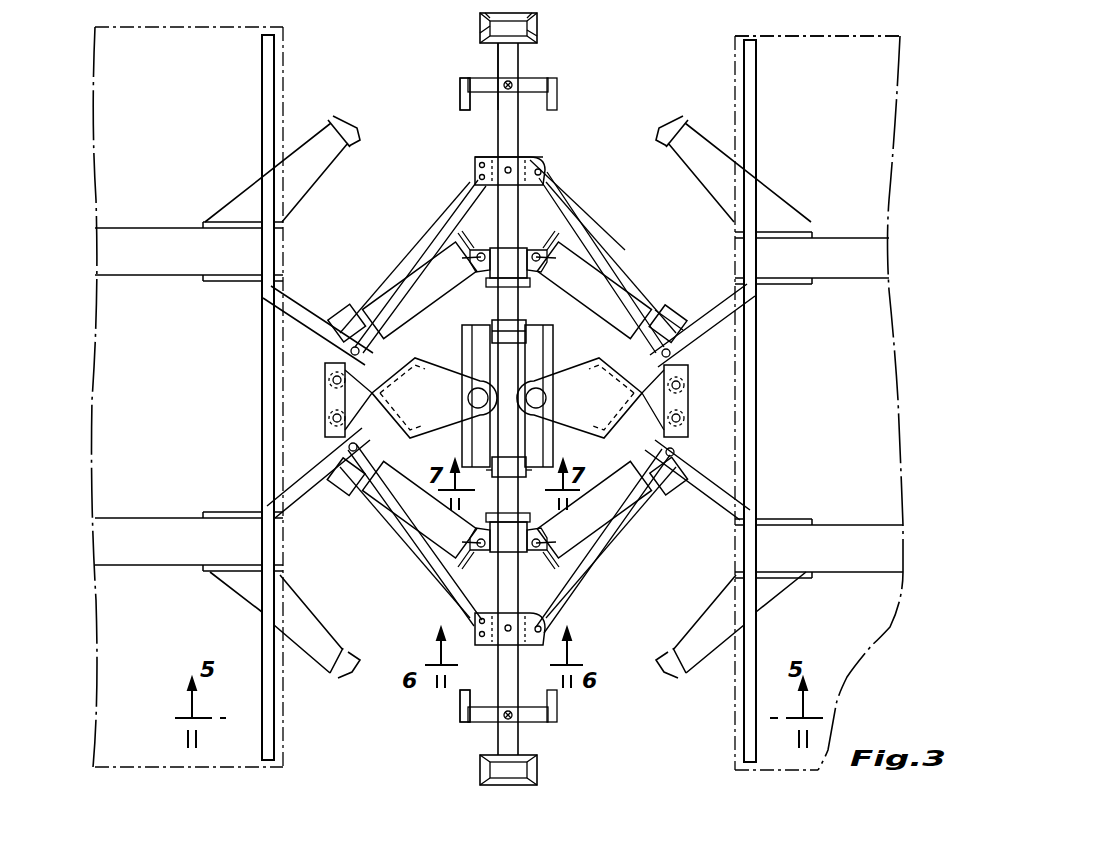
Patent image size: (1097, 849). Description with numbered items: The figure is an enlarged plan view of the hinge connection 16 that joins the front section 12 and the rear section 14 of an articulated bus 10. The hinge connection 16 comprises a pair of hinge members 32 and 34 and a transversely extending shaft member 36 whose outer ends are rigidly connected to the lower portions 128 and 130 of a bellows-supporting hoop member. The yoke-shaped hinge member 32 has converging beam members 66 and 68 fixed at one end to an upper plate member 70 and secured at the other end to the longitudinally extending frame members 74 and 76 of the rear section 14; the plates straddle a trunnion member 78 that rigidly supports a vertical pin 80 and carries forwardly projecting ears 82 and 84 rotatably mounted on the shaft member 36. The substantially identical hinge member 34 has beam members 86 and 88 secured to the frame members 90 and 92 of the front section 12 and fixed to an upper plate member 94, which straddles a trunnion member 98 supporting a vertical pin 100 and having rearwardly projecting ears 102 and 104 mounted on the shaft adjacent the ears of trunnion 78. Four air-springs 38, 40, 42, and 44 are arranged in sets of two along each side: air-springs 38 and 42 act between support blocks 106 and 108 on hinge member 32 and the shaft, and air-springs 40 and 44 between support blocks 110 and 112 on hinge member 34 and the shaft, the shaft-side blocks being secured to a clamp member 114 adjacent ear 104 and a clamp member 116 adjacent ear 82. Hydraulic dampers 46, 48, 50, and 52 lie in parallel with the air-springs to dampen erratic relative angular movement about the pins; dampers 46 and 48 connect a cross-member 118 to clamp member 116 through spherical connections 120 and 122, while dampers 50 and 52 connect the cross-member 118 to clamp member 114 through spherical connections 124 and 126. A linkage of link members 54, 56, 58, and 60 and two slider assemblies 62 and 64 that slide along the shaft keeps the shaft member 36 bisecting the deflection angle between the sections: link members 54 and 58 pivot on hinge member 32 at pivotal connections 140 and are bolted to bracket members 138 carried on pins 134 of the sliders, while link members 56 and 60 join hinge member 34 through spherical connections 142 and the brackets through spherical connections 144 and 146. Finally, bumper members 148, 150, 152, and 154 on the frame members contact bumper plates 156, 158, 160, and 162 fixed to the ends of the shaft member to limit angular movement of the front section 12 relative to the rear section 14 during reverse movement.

The bus 10 is at (862, 28).
The vehicle front section 12 is at (893, 150).
The vehicle rear section 14 is at (252, 27).
The hinge connection 16 is at (590, 110).
The hinge member 32 is at (297, 280).
The hinge member 34 is at (721, 305).
The shaft member 36 is at (512, 118).
The air-spring 38 is at (395, 265).
The air-spring 40 is at (647, 267).
The air-spring 42 is at (375, 525).
The air-spring 44 is at (650, 530).
The hydraulic damper 46 is at (432, 295).
The hydraulic damper 48 is at (620, 267).
The hydraulic damper 50 is at (395, 540).
The hydraulic damper 52 is at (610, 560).
The link member 54 is at (470, 180).
The link member 56 is at (555, 183).
The link member 58 is at (420, 595).
The link member 60 is at (560, 610).
The slider assembly 62 is at (535, 160).
The slider assembly 64 is at (458, 622).
The beam member 66 is at (290, 300).
The beam member 68 is at (290, 485).
The upper plate member 70 is at (465, 362).
The frame member 74 is at (118, 226).
The frame member 76 is at (118, 524).
The trunnion member 78 is at (462, 428).
The pin 80 is at (470, 398).
The ear 82 is at (508, 322).
The ear 84 is at (541, 404).
The beam member 86 is at (748, 292).
The beam member 88 is at (745, 480).
The frame member 90 is at (838, 236).
The frame member 92 is at (852, 524).
The upper plate member 94 is at (548, 366).
The trunnion member 98 is at (620, 300).
The pin 100 is at (548, 398).
The ear 102 is at (531, 343).
The ear 104 is at (475, 488).
The support block 106 is at (355, 295).
The support block 108 is at (455, 225).
The support block 110 is at (660, 325).
The support block 112 is at (563, 205).
The clamp member 114 is at (529, 488).
The clamp member 116 is at (490, 246).
The cross-member 118 is at (332, 398).
The spherical connection 120 is at (332, 380).
The spherical connection 122 is at (450, 200).
The spherical connection 124 is at (332, 418).
The spherical connection 126 is at (430, 557).
The lower portion of hoop member 128 is at (482, 770).
The lower portion of hoop member 130 is at (480, 28).
The pin 134 is at (505, 170).
The bracket member 138 is at (485, 185).
The pivotal connection 140 is at (350, 350).
The spherical connection 142 is at (672, 352).
The spherical connection 144 is at (542, 172).
The spherical connection 146 is at (545, 630).
The bumper member 148 is at (302, 155).
The bumper member 150 is at (290, 615).
The bumper member 152 is at (690, 137).
The bumper member 154 is at (700, 655).
The bumper plate 156 is at (460, 85).
The bumper plate 158 is at (460, 715).
The bumper plate 160 is at (557, 90).
The bumper plate 162 is at (557, 713).